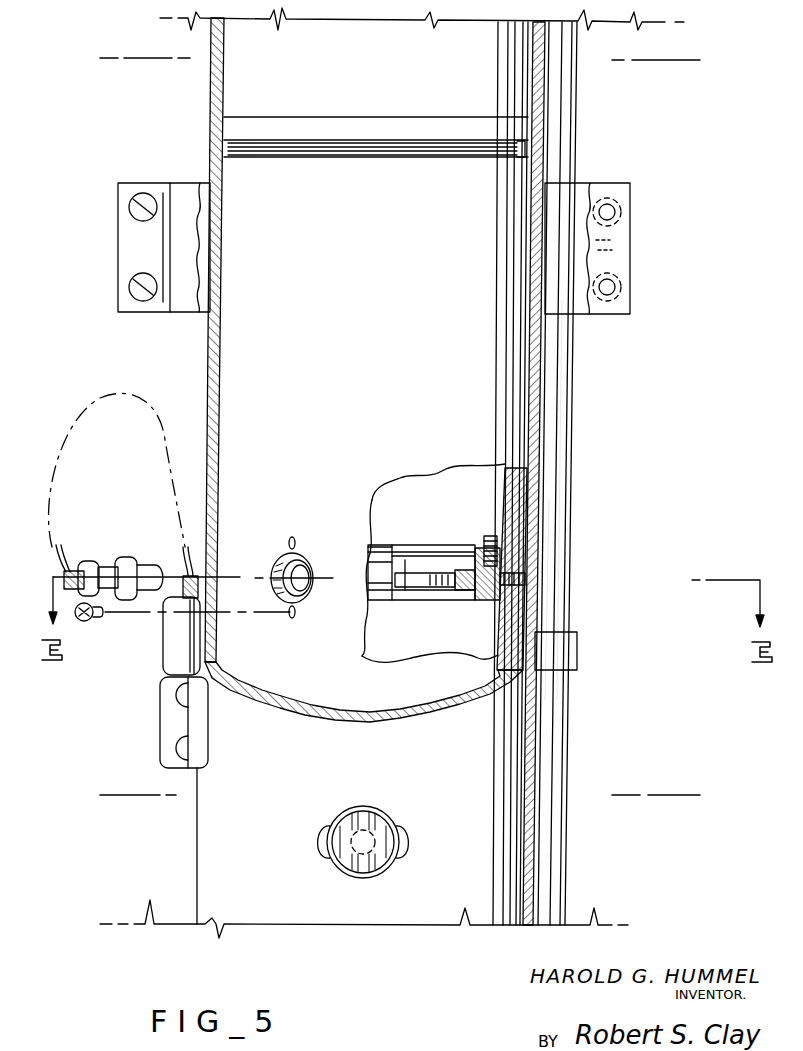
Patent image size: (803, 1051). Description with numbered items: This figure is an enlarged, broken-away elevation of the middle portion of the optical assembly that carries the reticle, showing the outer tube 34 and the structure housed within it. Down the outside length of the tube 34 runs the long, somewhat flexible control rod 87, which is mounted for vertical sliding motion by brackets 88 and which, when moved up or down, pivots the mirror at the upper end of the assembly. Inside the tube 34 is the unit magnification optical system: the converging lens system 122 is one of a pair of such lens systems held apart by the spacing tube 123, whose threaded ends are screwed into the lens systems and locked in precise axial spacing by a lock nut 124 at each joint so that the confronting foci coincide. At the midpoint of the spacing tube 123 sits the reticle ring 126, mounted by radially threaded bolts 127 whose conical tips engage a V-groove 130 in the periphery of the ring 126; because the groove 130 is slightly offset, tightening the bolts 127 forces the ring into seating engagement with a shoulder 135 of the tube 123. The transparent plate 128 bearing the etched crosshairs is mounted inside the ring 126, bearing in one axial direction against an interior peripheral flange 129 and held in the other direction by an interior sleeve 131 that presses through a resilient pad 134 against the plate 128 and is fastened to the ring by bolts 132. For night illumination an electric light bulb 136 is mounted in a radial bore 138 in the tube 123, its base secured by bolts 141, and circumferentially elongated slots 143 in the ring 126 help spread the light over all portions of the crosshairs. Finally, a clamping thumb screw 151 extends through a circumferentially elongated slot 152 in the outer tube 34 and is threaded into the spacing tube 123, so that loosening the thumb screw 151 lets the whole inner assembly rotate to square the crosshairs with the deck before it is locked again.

The tube 34 is at (235, 866).
The control rod 87 is at (572, 393).
The brackets 88 is at (578, 654).
The converging lens system 122 is at (341, 64).
The spacing tube 123 is at (298, 362).
The lock nut 124 is at (402, 130).
The reticle ring 126 is at (487, 600).
The radially threaded bolts 127 is at (540, 577).
The transparent plate 128 is at (405, 552).
The interior peripheral flange 129 is at (460, 592).
The V-groove 130 is at (478, 566).
The interior sleeve 131 is at (477, 545).
The bolts 132 is at (493, 538).
The resilient pad 134 is at (540, 538).
The shoulder 135 is at (540, 620).
The electric light bulb 136 is at (160, 568).
The radial bore 138 is at (302, 560).
The bolts 141 is at (82, 621).
The circumferentially elongated slots 143 is at (375, 576).
The clamping thumb screw 151 is at (380, 866).
The circumferentially elongated slot 152 is at (405, 836).